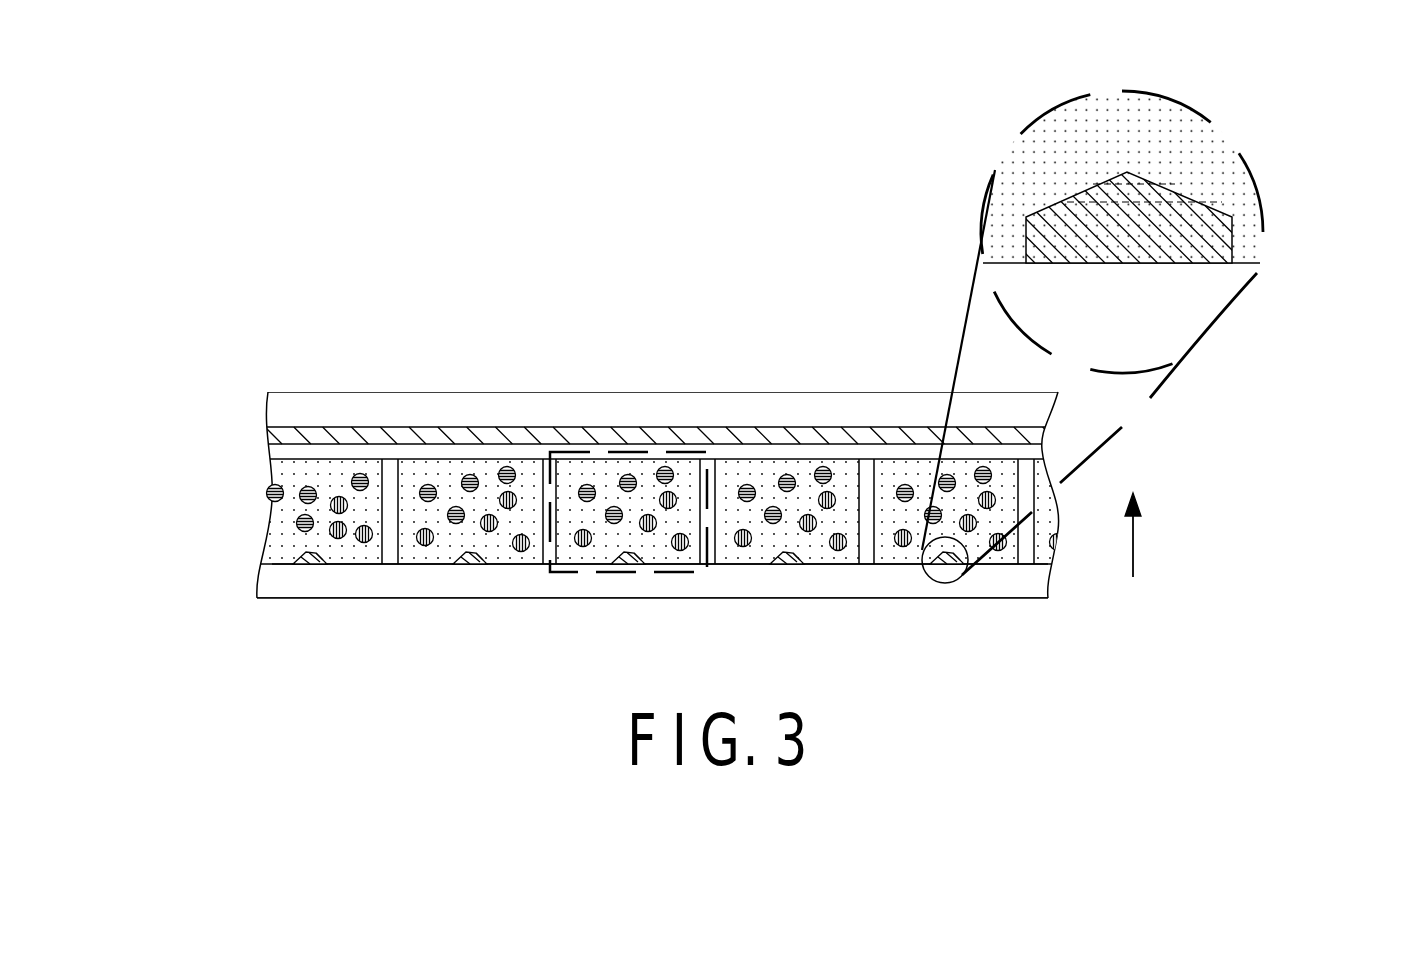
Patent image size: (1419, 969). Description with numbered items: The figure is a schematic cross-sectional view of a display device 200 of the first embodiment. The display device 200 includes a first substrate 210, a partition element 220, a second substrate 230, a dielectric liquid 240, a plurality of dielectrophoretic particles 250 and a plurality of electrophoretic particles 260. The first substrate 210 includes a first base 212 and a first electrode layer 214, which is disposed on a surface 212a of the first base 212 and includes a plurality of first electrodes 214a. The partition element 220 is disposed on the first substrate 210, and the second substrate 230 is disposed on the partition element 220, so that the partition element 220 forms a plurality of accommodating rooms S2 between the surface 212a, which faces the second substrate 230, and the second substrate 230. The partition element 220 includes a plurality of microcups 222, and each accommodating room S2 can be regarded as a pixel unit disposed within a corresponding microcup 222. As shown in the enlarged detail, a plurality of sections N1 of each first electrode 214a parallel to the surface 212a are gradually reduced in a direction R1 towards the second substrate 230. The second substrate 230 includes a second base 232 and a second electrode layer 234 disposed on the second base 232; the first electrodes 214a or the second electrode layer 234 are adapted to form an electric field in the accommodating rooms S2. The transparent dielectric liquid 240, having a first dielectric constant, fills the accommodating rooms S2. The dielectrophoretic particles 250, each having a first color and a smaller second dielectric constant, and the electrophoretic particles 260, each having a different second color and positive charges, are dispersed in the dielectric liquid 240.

The display device 200 is at (1202, 680).
The first substrate 210 is at (160, 523).
The first base 212 is at (268, 578).
The surface of the first base 212a is at (364, 553).
The first electrode layer 214 is at (278, 544).
The first electrodes 214a is at (313, 562).
The partition element 220 is at (868, 452).
The microcups 222 is at (632, 452).
The second substrate 230 is at (160, 375).
The second base 232 is at (268, 398).
The second electrode layer 234 is at (268, 436).
The dielectric liquid 240 is at (433, 467).
The dielectrophoretic particles 250 is at (506, 468).
The electrophoretic particles 260 is at (422, 532).
The accommodating rooms S2 is at (698, 466).
The sections of the first electrodes N1 is at (1148, 187).
The direction towards the second substrate R1 is at (1133, 543).